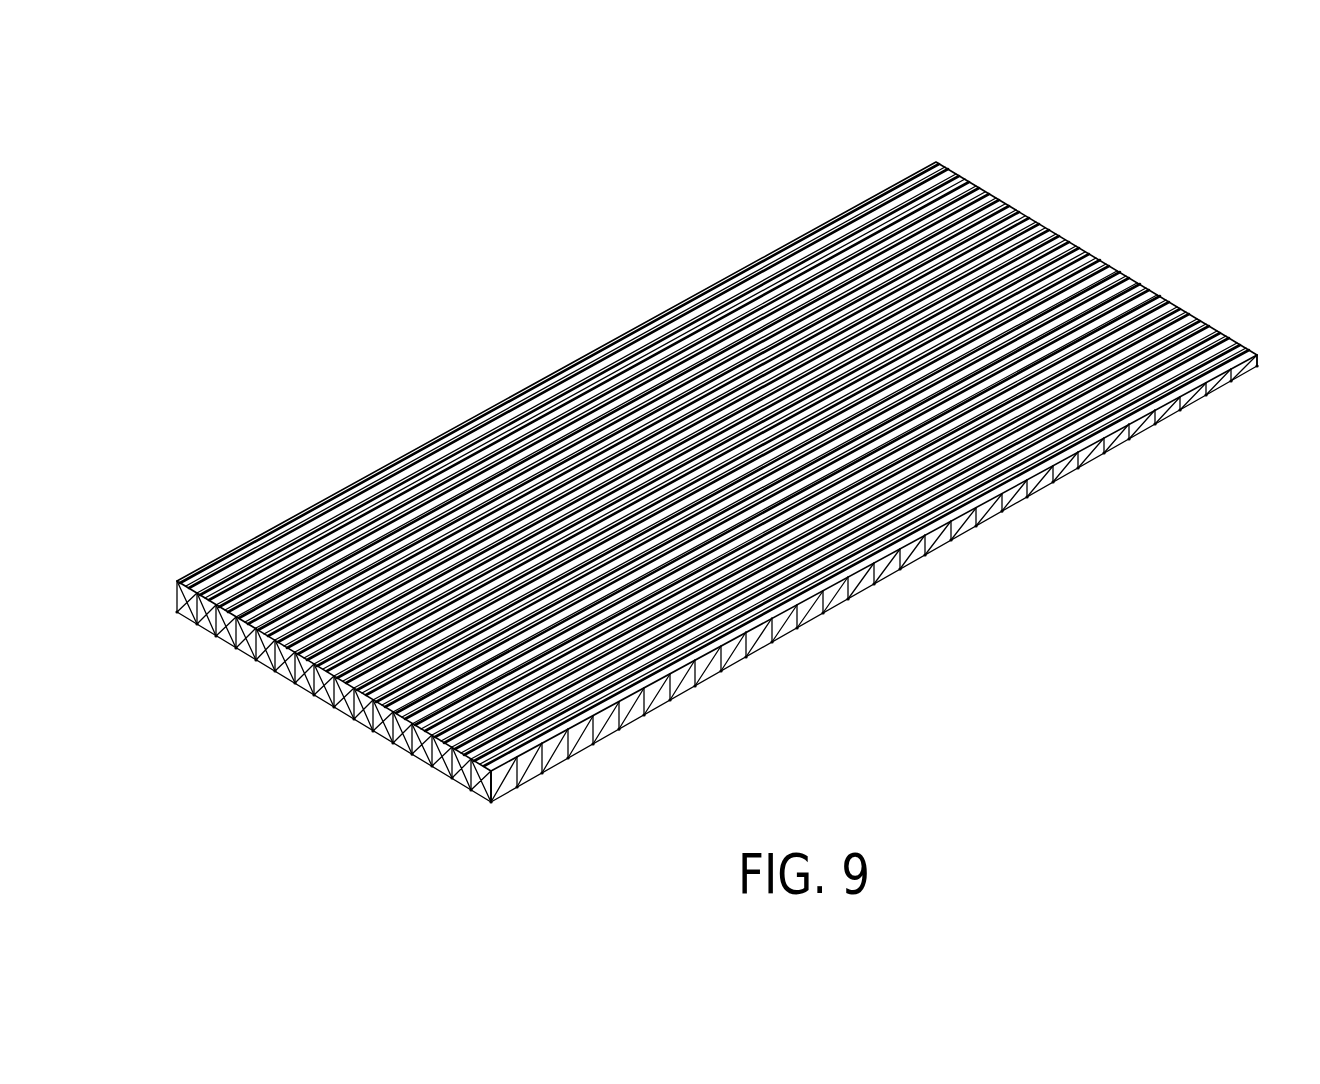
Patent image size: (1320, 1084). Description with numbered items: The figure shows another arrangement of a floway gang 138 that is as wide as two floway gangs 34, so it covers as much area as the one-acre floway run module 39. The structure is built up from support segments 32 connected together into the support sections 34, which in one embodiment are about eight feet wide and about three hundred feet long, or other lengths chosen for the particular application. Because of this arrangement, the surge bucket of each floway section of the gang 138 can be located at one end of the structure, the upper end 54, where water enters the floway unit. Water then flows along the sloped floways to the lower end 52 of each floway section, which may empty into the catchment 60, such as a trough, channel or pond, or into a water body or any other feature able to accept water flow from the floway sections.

The run module 39 is at (1131, 137).
The catchment 60 is at (1128, 279).
The floway gang 138 is at (435, 828).
The support section 34 is at (1275, 393).
The support segment 32 is at (228, 637).
The upper end 54 is at (480, 772).
The lower end 52 is at (1220, 362).